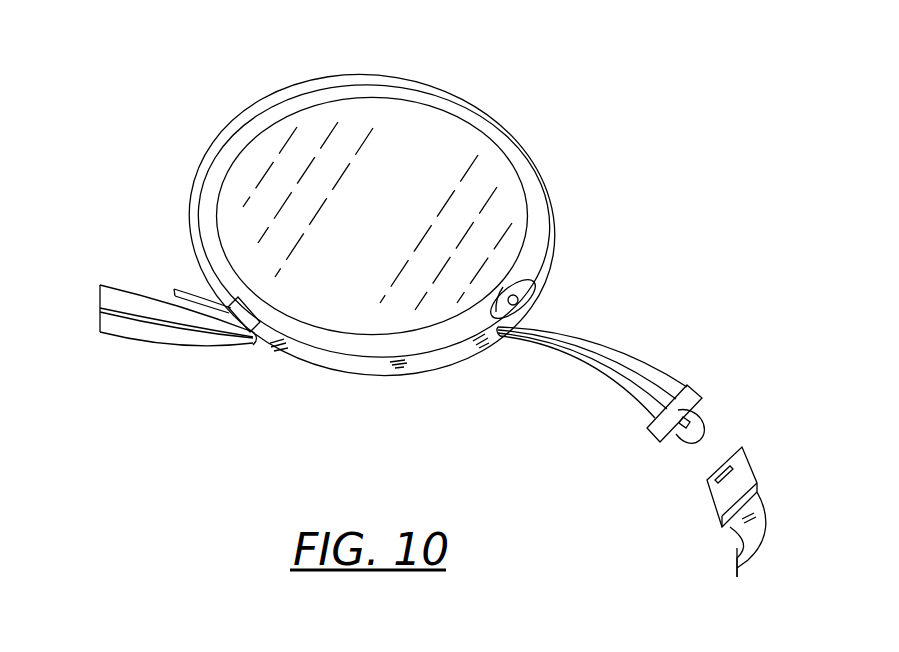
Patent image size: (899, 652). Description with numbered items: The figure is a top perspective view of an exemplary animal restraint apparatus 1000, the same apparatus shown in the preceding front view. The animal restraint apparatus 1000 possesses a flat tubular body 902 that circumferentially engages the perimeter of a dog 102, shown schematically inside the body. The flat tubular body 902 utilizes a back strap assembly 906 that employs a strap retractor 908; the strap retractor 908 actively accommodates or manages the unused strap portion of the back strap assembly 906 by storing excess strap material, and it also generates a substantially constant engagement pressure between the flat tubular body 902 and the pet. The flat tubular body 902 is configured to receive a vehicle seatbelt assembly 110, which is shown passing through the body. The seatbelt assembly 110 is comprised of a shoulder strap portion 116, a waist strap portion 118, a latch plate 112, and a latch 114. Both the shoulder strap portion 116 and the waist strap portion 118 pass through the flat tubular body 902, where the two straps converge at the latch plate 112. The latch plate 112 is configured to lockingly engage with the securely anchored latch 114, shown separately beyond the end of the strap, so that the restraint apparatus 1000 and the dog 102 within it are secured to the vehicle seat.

The animal restraint apparatus 1000 is at (173, 60).
The back strap assembly 906 is at (514, 137).
The flat tubular body 902 is at (370, 363).
The dog 102 is at (396, 232).
The strap retractor 908 is at (537, 288).
The seatbelt assembly 110 is at (166, 384).
The shoulder strap portion 116 is at (112, 302).
The waist strap portion 118 is at (120, 330).
The latch plate 112 is at (689, 390).
The latch 114 is at (713, 507).